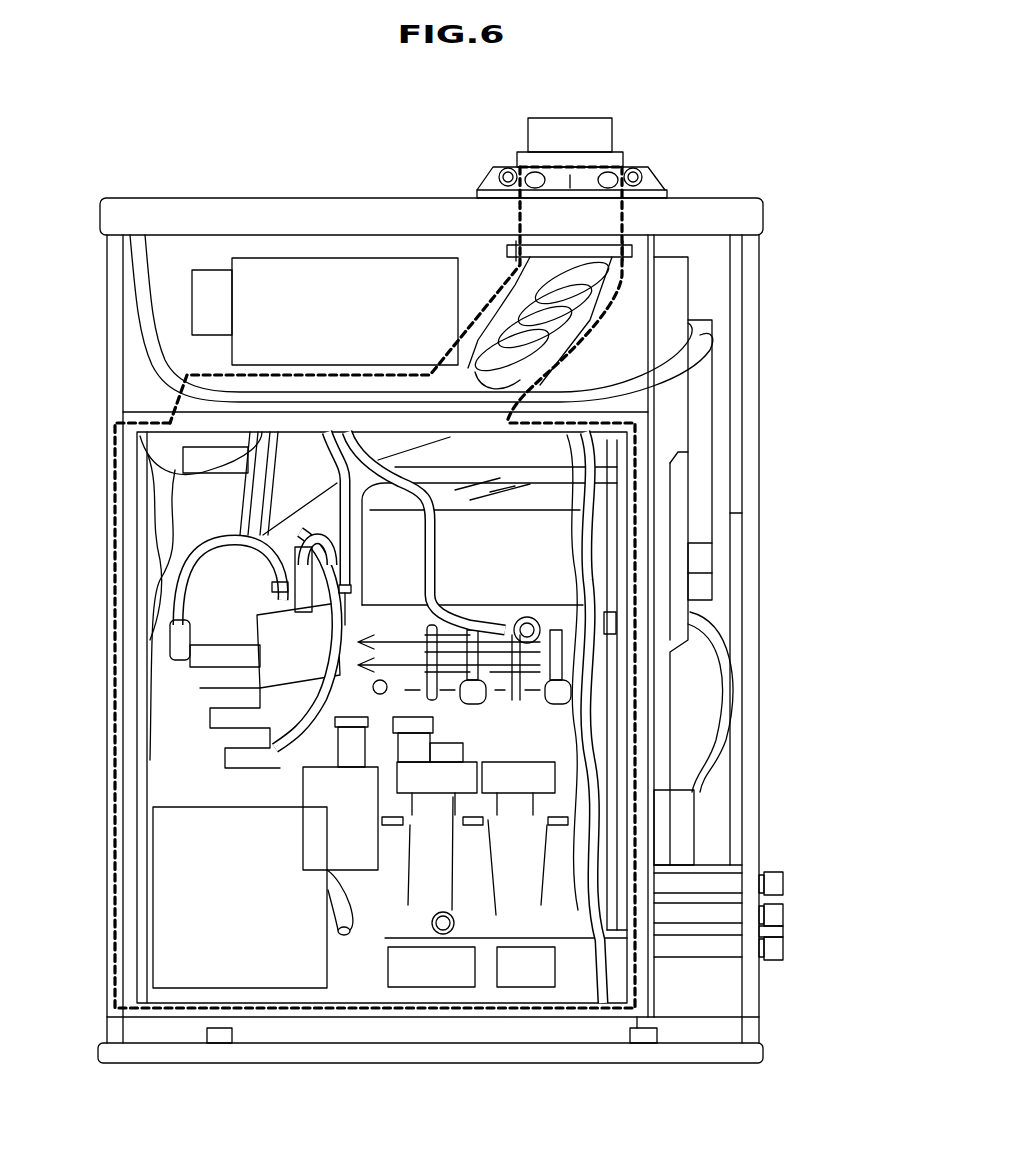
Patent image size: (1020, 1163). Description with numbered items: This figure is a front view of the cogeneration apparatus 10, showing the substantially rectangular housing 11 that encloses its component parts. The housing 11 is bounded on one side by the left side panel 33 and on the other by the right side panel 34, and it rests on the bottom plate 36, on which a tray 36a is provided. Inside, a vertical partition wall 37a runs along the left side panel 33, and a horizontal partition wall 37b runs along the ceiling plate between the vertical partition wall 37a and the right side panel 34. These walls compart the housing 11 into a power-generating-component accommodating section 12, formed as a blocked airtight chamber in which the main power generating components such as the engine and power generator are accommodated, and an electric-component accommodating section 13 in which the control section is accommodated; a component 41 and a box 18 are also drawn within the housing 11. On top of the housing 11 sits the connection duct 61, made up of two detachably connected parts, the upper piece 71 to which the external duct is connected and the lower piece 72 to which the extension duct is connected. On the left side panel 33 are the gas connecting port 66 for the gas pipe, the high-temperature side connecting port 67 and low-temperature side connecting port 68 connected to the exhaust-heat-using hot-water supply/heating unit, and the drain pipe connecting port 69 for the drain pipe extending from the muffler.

The cogeneration apparatus 10 is at (175, 75).
The housing 11 is at (402, 113).
The power-generating-component accommodating section 12 is at (273, 367).
The electric-component accommodating section 13 is at (178, 260).
The controller box 18 is at (243, 990).
The left side panel 33 is at (760, 489).
The right side panel 34 is at (105, 465).
The bottom plate 36 is at (367, 1017).
The tray 36a is at (452, 1063).
The vertical partition wall 37a is at (645, 598).
The horizontal partition wall 37b is at (317, 420).
The fan unit 41 is at (363, 253).
The connection duct 61 is at (676, 183).
The gas connecting port 66 is at (785, 882).
The high-temperature side connecting port 67 is at (786, 915).
The low-temperature side connecting port 68 is at (786, 932).
The drain pipe connecting port 69 is at (786, 948).
The upper piece 71 is at (620, 130).
The lower piece 72 is at (630, 238).